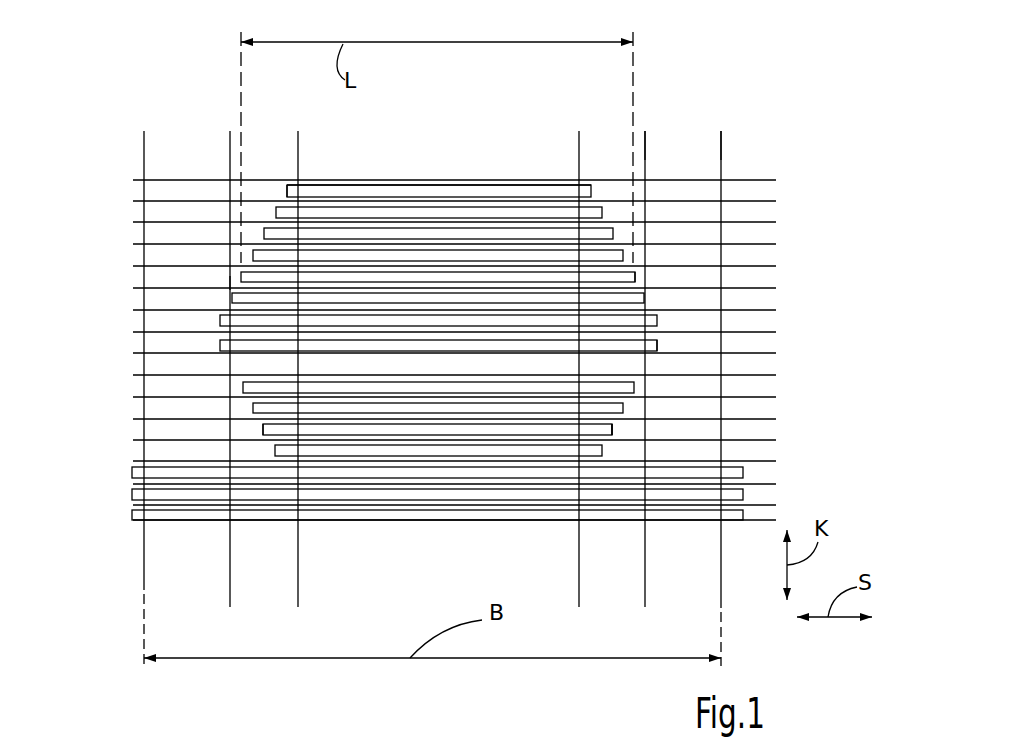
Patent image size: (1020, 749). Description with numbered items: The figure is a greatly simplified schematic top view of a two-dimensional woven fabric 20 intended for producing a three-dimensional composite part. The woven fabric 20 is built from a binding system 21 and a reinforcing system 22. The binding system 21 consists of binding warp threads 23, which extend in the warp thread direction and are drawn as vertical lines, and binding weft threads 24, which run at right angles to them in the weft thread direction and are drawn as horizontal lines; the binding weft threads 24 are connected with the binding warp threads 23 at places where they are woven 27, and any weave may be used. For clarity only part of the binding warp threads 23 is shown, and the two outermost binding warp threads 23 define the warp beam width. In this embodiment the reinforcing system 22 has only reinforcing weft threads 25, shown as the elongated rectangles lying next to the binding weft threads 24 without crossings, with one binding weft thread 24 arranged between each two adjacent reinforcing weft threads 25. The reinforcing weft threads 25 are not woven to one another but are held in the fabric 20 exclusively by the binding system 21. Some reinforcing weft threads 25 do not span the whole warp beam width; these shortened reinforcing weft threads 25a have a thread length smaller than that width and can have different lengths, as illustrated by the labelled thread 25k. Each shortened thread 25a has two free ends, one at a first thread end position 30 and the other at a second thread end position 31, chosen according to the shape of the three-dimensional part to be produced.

The two-dimensional woven fabric 20 is at (465, 335).
The binding system 21 is at (688, 152).
The reinforcing system 22 is at (467, 172).
The binding warp threads 23 is at (144, 159).
The binding weft threads 24 is at (770, 222).
The reinforcing weft threads 25 is at (400, 386).
The short plate 25k is at (241, 280).
The shortened reinforcing weft threads 25a is at (220, 344).
The places where they are woven 27 is at (287, 190).
The first thread end position 30 is at (635, 277).
The second thread end position 31 is at (240, 280).